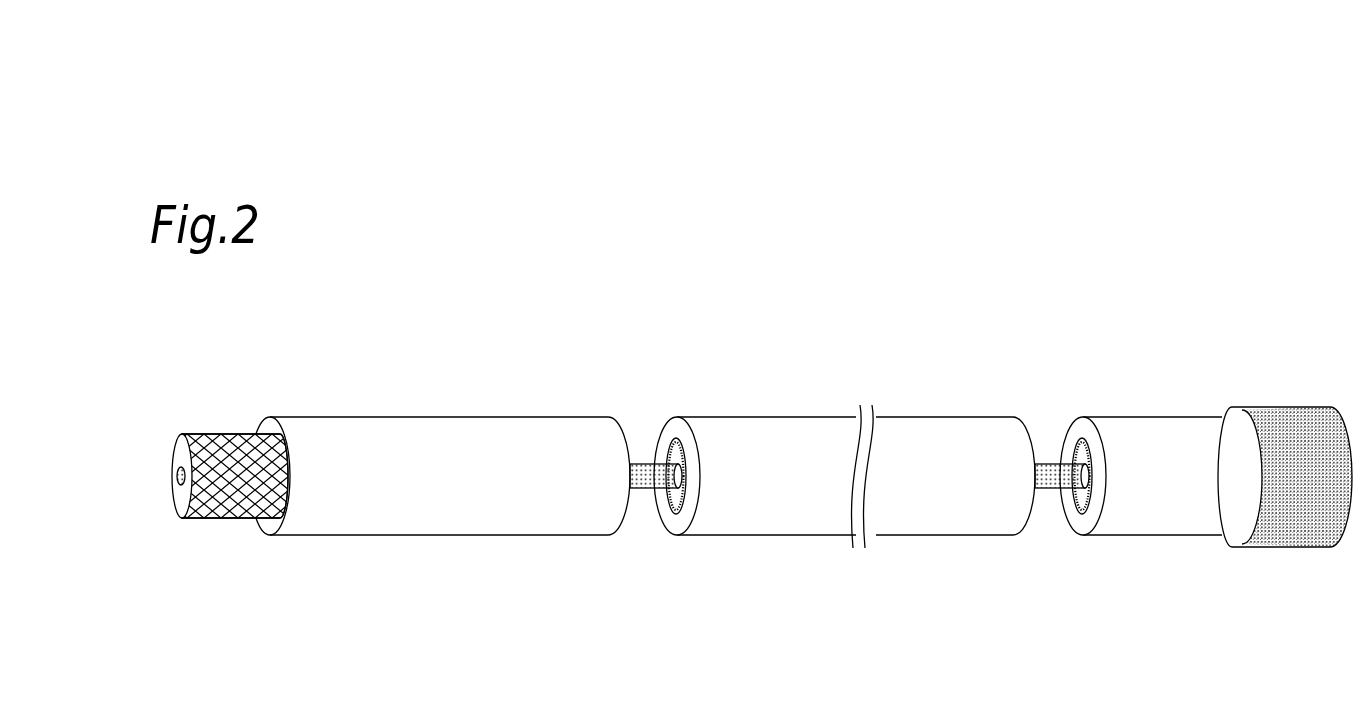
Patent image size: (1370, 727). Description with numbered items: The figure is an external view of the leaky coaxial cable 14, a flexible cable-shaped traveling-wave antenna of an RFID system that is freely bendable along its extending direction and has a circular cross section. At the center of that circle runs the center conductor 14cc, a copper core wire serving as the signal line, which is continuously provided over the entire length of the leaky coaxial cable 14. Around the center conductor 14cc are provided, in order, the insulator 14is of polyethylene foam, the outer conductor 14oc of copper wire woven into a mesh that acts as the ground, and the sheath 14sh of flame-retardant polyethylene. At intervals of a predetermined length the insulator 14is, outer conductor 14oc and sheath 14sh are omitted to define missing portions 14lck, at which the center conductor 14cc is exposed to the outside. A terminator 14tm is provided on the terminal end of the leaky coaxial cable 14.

The leaky coaxial cable 14 is at (337, 618).
The outer conductor 14oc is at (214, 433).
The sheath 14sh is at (452, 518).
The center conductor 14cc is at (640, 462).
The insulator 14is is at (680, 498).
The missing portion 14lck is at (664, 407).
The terminator 14tm is at (1310, 520).